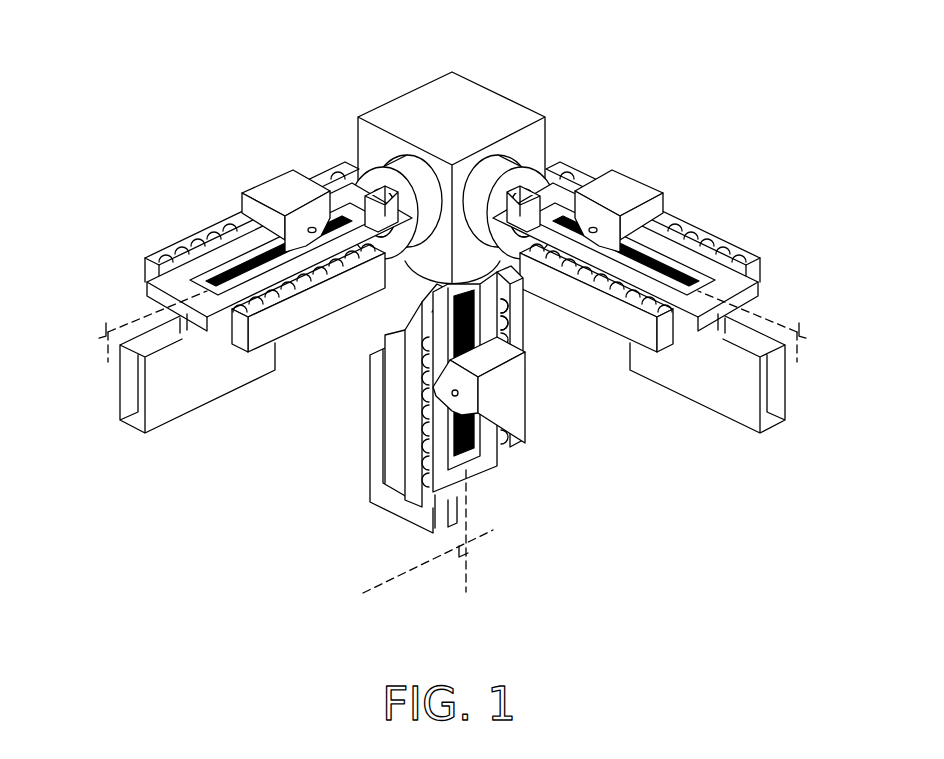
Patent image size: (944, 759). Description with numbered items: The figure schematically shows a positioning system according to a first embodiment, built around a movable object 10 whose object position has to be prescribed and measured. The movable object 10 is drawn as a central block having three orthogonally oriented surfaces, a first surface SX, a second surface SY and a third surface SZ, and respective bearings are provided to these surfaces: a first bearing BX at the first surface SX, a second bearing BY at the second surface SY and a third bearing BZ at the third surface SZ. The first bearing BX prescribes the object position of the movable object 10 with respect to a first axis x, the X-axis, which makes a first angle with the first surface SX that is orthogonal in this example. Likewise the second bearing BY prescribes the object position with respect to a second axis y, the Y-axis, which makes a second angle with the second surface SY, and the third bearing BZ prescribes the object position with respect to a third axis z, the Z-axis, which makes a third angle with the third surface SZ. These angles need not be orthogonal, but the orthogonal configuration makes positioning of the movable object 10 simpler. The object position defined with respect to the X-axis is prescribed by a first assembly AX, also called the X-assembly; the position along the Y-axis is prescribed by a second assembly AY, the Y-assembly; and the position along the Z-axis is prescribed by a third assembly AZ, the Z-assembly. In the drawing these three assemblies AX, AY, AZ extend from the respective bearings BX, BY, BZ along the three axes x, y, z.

The movable object 10 is at (470, 90).
The first surface SX is at (361, 137).
The second surface SY is at (544, 137).
The third surface SZ is at (418, 271).
The first bearing BX is at (361, 178).
The second bearing BY is at (544, 178).
The third bearing BZ is at (478, 280).
The first assembly AX is at (260, 286).
The second assembly AY is at (645, 286).
The third assembly AZ is at (347, 318).
The first axis x is at (78, 345).
The second axis y is at (827, 345).
The third axis z is at (471, 578).